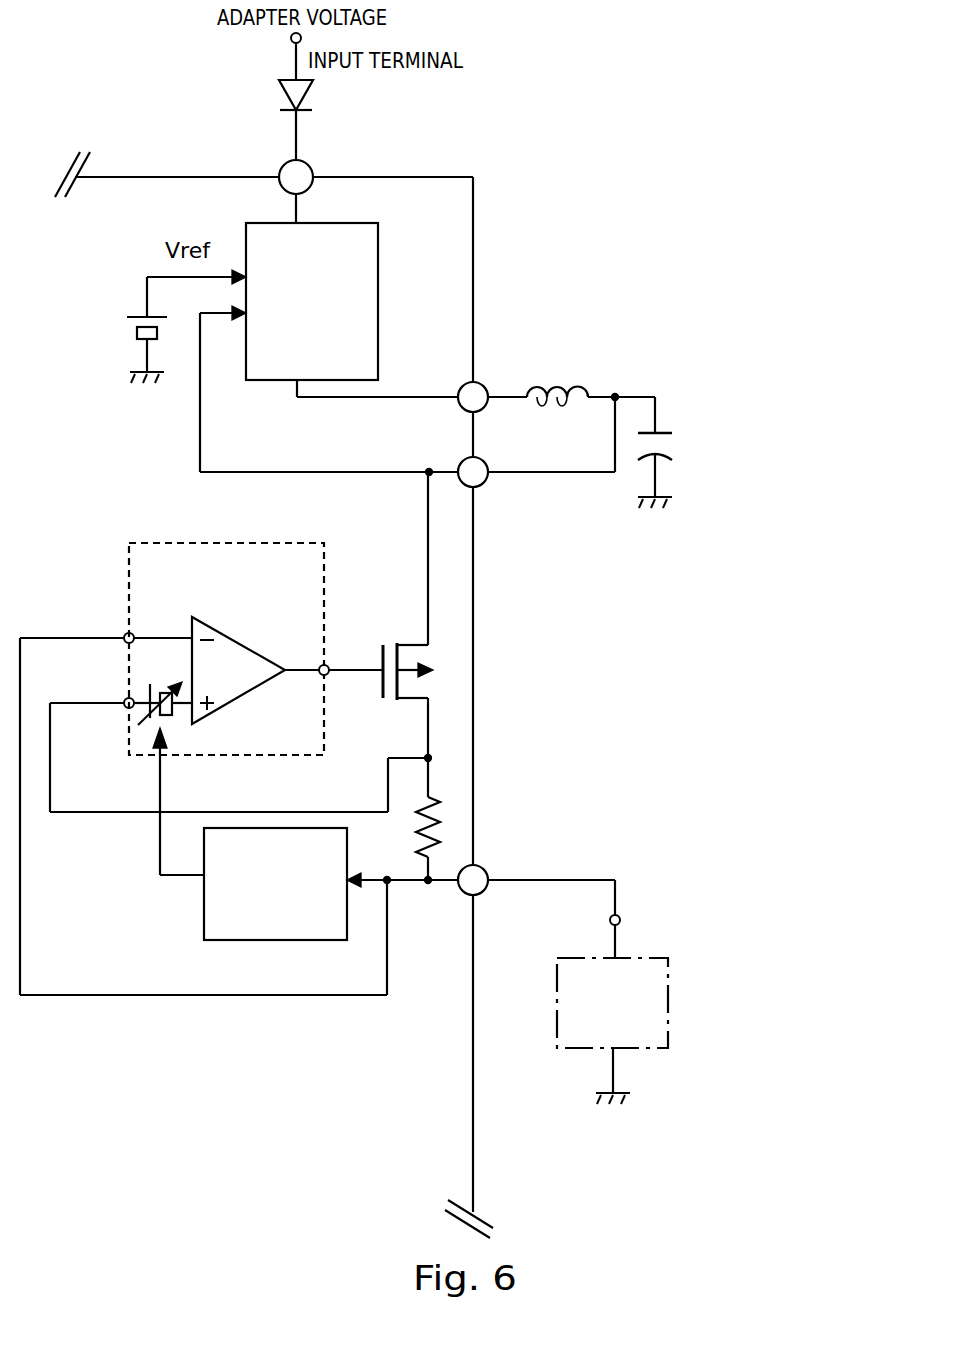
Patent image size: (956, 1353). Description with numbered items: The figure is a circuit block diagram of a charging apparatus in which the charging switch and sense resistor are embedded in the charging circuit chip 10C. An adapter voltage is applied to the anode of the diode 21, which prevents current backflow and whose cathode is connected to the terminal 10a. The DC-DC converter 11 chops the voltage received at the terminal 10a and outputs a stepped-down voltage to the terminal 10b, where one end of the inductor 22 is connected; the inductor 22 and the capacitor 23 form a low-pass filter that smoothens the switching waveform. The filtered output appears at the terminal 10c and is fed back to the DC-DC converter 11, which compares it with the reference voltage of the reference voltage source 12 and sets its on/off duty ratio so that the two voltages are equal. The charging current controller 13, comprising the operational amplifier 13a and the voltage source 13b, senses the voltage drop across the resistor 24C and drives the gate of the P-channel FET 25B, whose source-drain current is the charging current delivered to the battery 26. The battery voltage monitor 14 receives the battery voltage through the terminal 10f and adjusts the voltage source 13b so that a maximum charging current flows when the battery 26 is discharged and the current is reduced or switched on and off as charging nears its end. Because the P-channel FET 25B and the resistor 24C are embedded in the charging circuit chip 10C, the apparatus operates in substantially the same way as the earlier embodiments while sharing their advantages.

The diode 21 is at (312, 98).
The external connection terminal 10a is at (312, 165).
The charging circuit chip 10C is at (473, 205).
The DC-DC converter 11 is at (380, 253).
The reference voltage source 12 is at (127, 323).
The external connection terminal 10b is at (484, 383).
The inductor 22 is at (578, 380).
The capacitor 23 is at (670, 447).
The external connection terminal 10c is at (488, 466).
The charging current controller 13 is at (239, 673).
The operational amplifier 13a is at (228, 707).
The voltage source 13b is at (150, 725).
The P-channel FET 25B is at (410, 706).
The resistor 24C is at (445, 820).
The battery voltage monitor 14 is at (315, 942).
The external connection terminal 10f is at (488, 868).
The battery 26 is at (668, 976).